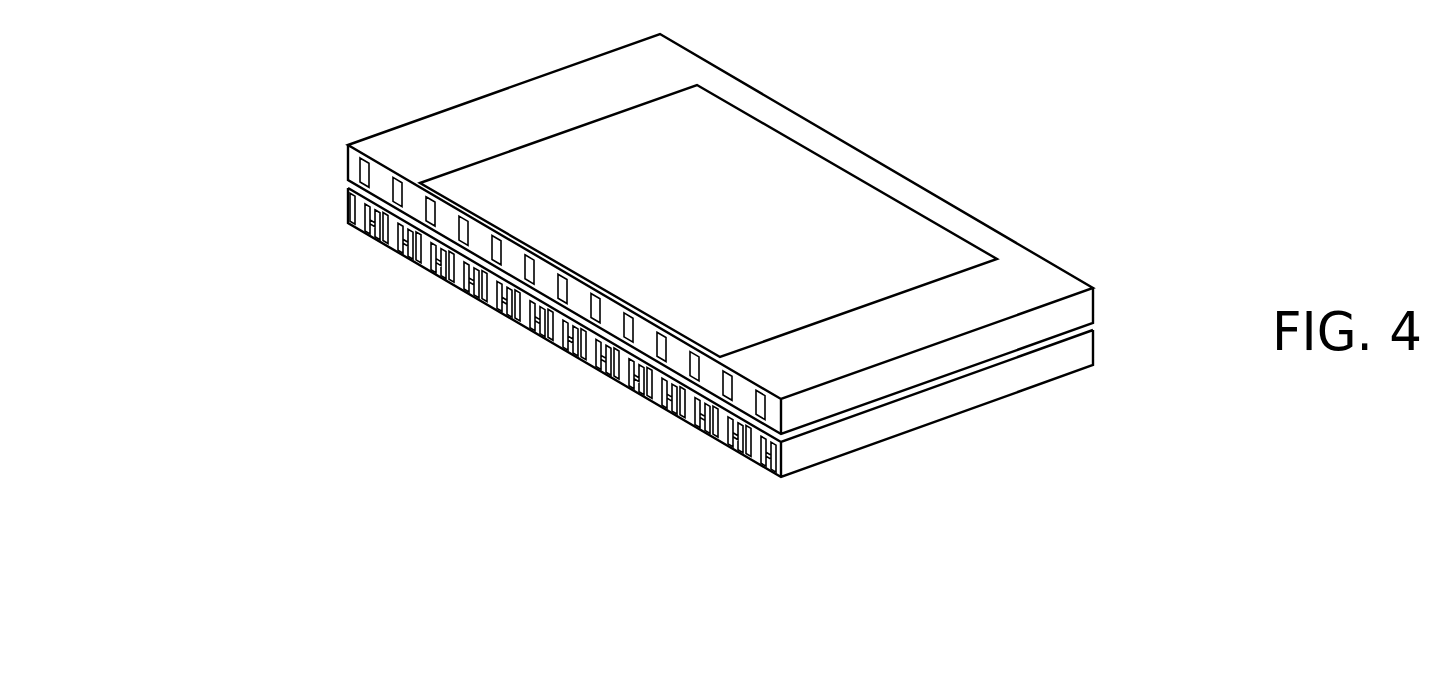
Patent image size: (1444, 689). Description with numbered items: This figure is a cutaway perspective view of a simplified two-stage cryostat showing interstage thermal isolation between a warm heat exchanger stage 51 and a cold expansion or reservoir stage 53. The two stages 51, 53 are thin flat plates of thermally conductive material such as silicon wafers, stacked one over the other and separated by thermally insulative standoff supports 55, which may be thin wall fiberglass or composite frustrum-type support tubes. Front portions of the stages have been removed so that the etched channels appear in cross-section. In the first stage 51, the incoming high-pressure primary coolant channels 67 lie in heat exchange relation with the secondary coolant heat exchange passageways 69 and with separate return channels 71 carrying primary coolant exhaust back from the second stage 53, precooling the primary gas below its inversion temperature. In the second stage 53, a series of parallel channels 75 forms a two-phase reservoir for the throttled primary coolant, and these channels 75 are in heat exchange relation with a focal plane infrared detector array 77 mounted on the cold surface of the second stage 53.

The heat exchanger stage 51 is at (352, 220).
The reservoir stage 53 is at (352, 163).
The standoff supports 55 is at (679, 399).
The primary coolant channels 67 is at (544, 328).
The heat exchange passageways 69 is at (584, 356).
The outlet port 71 is at (462, 280).
The parallel channels 75 is at (617, 312).
The focal plane infrared detector array 77 is at (723, 200).